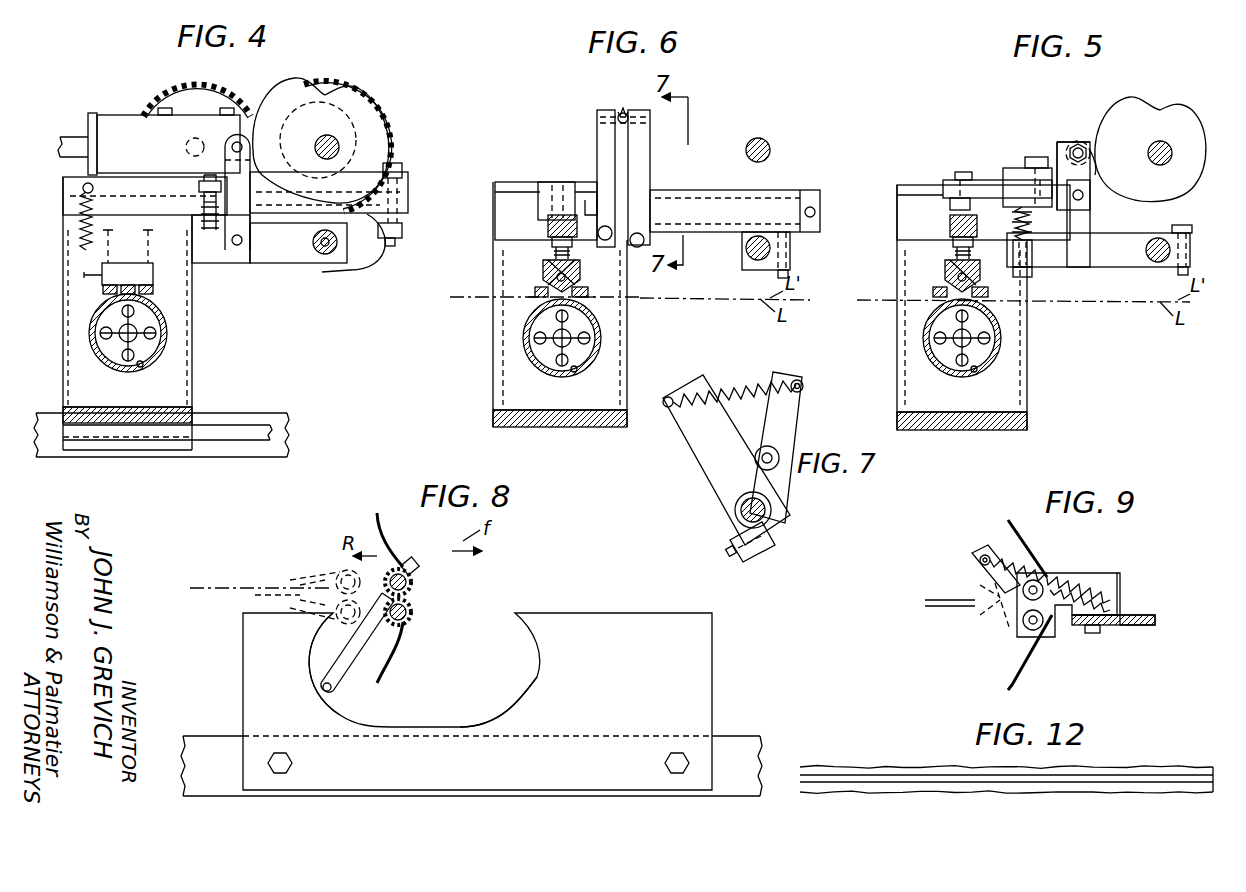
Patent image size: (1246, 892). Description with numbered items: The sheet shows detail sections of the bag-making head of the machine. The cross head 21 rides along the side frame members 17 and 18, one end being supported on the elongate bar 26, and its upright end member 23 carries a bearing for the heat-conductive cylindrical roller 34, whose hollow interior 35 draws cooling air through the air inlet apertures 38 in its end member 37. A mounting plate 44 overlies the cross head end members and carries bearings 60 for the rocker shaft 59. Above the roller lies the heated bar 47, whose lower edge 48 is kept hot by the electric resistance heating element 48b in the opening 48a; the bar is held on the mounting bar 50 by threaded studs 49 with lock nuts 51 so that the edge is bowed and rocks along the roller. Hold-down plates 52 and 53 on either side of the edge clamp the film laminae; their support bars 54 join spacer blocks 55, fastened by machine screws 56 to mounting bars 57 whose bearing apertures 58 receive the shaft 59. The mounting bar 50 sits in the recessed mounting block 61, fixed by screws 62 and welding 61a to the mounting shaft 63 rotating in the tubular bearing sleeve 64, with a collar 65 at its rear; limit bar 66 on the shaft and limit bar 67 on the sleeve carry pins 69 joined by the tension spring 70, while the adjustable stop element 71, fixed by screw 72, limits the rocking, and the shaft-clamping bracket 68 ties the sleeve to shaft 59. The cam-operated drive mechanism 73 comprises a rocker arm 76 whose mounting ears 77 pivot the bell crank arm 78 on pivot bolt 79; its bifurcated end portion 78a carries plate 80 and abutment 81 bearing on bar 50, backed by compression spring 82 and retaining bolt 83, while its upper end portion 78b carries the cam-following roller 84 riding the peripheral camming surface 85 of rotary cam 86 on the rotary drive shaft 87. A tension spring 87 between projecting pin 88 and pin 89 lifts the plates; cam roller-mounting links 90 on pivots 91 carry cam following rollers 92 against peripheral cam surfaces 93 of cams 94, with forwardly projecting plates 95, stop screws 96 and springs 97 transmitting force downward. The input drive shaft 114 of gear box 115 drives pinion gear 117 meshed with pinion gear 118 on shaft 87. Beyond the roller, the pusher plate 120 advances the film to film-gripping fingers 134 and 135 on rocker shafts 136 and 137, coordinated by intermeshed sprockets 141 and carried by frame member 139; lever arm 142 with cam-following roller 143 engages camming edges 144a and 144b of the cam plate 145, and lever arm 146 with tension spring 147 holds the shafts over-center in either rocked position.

In FIG. 8, the side frame member 17 is at (730, 737).
In FIG. 4, the side frame member 18 is at (262, 420).
In FIG. 4, the cross head 21 is at (136, 408).
In FIG. 6, the cross head 21 is at (552, 410).
In FIG. 5, the cross head 21 is at (1027, 423).
In FIG. 4, the upright rigid end member 23 is at (192, 336).
In FIG. 6, the upright rigid end member 23 is at (493, 346).
In FIG. 5, the upright rigid end member 23 is at (1027, 360).
In FIG. 4, the elongate bar 26 is at (232, 423).
In FIG. 4, the heat-conductive cylindrical roller 34 is at (110, 367).
In FIG. 6, the heat-conductive cylindrical roller 34 is at (548, 372).
In FIG. 5, the heat-conductive cylindrical roller 34 is at (946, 376).
In FIG. 12, the heat-conductive cylindrical roller 34 is at (998, 785).
In FIG. 4, the hollow and open interior 35 is at (141, 366).
In FIG. 6, the hollow and open interior 35 is at (575, 371).
In FIG. 5, the hollow and open interior 35 is at (975, 372).
In FIG. 4, the end member 37 is at (148, 348).
In FIG. 6, the end member 37 is at (582, 352).
In FIG. 5, the end member 37 is at (982, 360).
In FIG. 4, the air inlet apertures 38 is at (128, 333).
In FIG. 6, the air inlet apertures 38 is at (562, 338).
In FIG. 5, the air inlet apertures 38 is at (962, 338).
In FIG. 4, the mounting plate 44 is at (63, 202).
In FIG. 6, the mounting plate 44 is at (495, 210).
In FIG. 5, the mounting plate 44 is at (897, 212).
In FIG. 6, the heated bar 47 is at (556, 277).
In FIG. 5, the heated bar 47 is at (957, 277).
In FIG. 12, the heated bar 47 is at (906, 770).
In FIG. 6, the lower edge 48 is at (565, 292).
In FIG. 5, the lower edge 48 is at (967, 292).
In FIG. 12, the lower edge 48 is at (898, 792).
In FIG. 6, the opening 48a is at (580, 278).
In FIG. 6, the electric resistance heating element 48b is at (580, 266).
In FIG. 5, the electric resistance heating element 48b is at (978, 274).
In FIG. 6, the threaded studs 49 is at (570, 251).
In FIG. 5, the threaded studs 49 is at (971, 252).
In FIG. 6, the mounting bar 50 is at (548, 229).
In FIG. 5, the mounting bar 50 is at (950, 231).
In FIG. 6, the lock nuts 51 is at (556, 256).
In FIG. 5, the lock nuts 51 is at (957, 258).
In FIG. 4, the hold-down plate 52 is at (153, 294).
In FIG. 6, the hold-down plate 52 is at (592, 300).
In FIG. 4, the hold-down plate 53 is at (103, 294).
In FIG. 6, the hold-down plate 53 is at (540, 300).
In FIG. 4, the support bars 54 is at (129, 278).
In FIG. 6, the support bars 54 is at (535, 291).
In FIG. 5, the support bars 54 is at (933, 291).
In FIG. 4, the spacer blocks 55 is at (153, 277).
In FIG. 4, the machine screws 56 is at (128, 244).
In FIG. 4, the mounting bars 57 is at (205, 262).
In FIG. 4, the bearing apertures 58 is at (316, 254).
In FIG. 4, the shaft 59 is at (332, 250).
In FIG. 6, the shaft 59 is at (746, 247).
In FIG. 5, the shaft 59 is at (1160, 262).
In FIG. 4, the bearings 60 is at (362, 240).
In FIG. 6, the recessed mounting block 61 is at (545, 195).
In FIG. 6, the welding 61a is at (590, 192).
In FIG. 6, the screws 62 is at (558, 186).
In FIG. 6, the mounting shaft 63 is at (612, 236).
In FIG. 7, the mounting shaft 63 is at (736, 512).
In FIG. 6, the tubular bearing sleeve 64 is at (752, 190).
In FIG. 7, the tubular bearing sleeve 64 is at (745, 528).
In FIG. 6, the collar 65 is at (809, 195).
In FIG. 6, the limit bar 66 is at (600, 134).
In FIG. 7, the limit bar 66 is at (785, 420).
In FIG. 6, the limit bar 67 is at (642, 135).
In FIG. 7, the limit bar 67 is at (700, 458).
In FIG. 6, the shaft-clamping bracket 68 is at (744, 264).
In FIG. 7, the pins 69 is at (670, 397).
In FIG. 6, the tension spring 70 is at (626, 110).
In FIG. 7, the tension spring 70 is at (757, 384).
In FIG. 7, the adjustable stop element 71 is at (773, 467).
In FIG. 7, the screw 72 is at (758, 464).
In FIG. 5, the cam-operated drive mechanism 73 is at (1044, 140).
In FIG. 5, the rocker arm 76 is at (1124, 245).
In FIG. 5, the mounting ears 77 is at (1085, 221).
In FIG. 5, the bell crank arm 78 is at (1090, 183).
In FIG. 5, the bifurcated end portion 78a is at (1014, 168).
In FIG. 5, the upper end portion 78b is at (1060, 142).
In FIG. 5, the pivot bolt 79 is at (1084, 196).
In FIG. 5, the plate 80 is at (988, 185).
In FIG. 5, the abutment 81 is at (952, 208).
In FIG. 5, the compression spring 82 is at (1030, 220).
In FIG. 5, the retaining bolt 83 is at (1032, 273).
In FIG. 5, the cam-following roller 84 is at (1078, 143).
In FIG. 5, the peripheral camming surface 85 is at (1177, 115).
In FIG. 5, the rotary cam 86 is at (1188, 136).
In FIG. 4, the rotary drive shaft 87 is at (328, 159).
In FIG. 6, the rotary drive shaft 87 is at (753, 142).
In FIG. 5, the rotary drive shaft 87 is at (1162, 163).
In FIG. 4, the projecting pin 88 is at (84, 276).
In FIG. 4, the pin 89 is at (85, 186).
In FIG. 4, the cam roller-mounting links 90 is at (242, 232).
In FIG. 4, the pivots 91 is at (240, 246).
In FIG. 4, the cam following rollers 92 is at (230, 140).
In FIG. 4, the peripheral cam surfaces 93 is at (296, 84).
In FIG. 4, the cams 94 is at (320, 118).
In FIG. 4, the forwardly projecting plates 95 is at (204, 196).
In FIG. 4, the stop screws 96 is at (210, 179).
In FIG. 4, the springs 97 is at (204, 212).
In FIG. 4, the input drive shaft 114 is at (75, 142).
In FIG. 4, the gear box 115 is at (108, 120).
In FIG. 4, the pinion gear 117 is at (192, 85).
In FIG. 4, the pinion gear 118 is at (385, 104).
In FIG. 9, the pusher plate 120 is at (925, 603).
In FIG. 8, the film-gripping fingers 134 is at (388, 530).
In FIG. 9, the film-gripping fingers 134 is at (1005, 524).
In FIG. 8, the film-gripping fingers 135 is at (395, 649).
In FIG. 9, the film-gripping fingers 135 is at (1012, 673).
In FIG. 8, the rocker shaft 136 is at (413, 586).
In FIG. 9, the rocker shaft 136 is at (1038, 580).
In FIG. 8, the rocker shaft 137 is at (413, 614).
In FIG. 9, the rocker shaft 137 is at (1042, 626).
In FIG. 9, the frame member 139 is at (1130, 618).
In FIG. 8, the intermeshed sprockets 141 is at (340, 593).
In FIG. 8, the lever arm 142 is at (348, 668).
In FIG. 8, the cam-following roller 143 is at (320, 692).
In FIG. 8, the camming edge 144a is at (312, 658).
In FIG. 8, the camming edge 144b is at (534, 674).
In FIG. 8, the cam plate 145 is at (653, 660).
In FIG. 9, the lever arm 146 is at (985, 588).
In FIG. 9, the tension spring 147 is at (1065, 588).